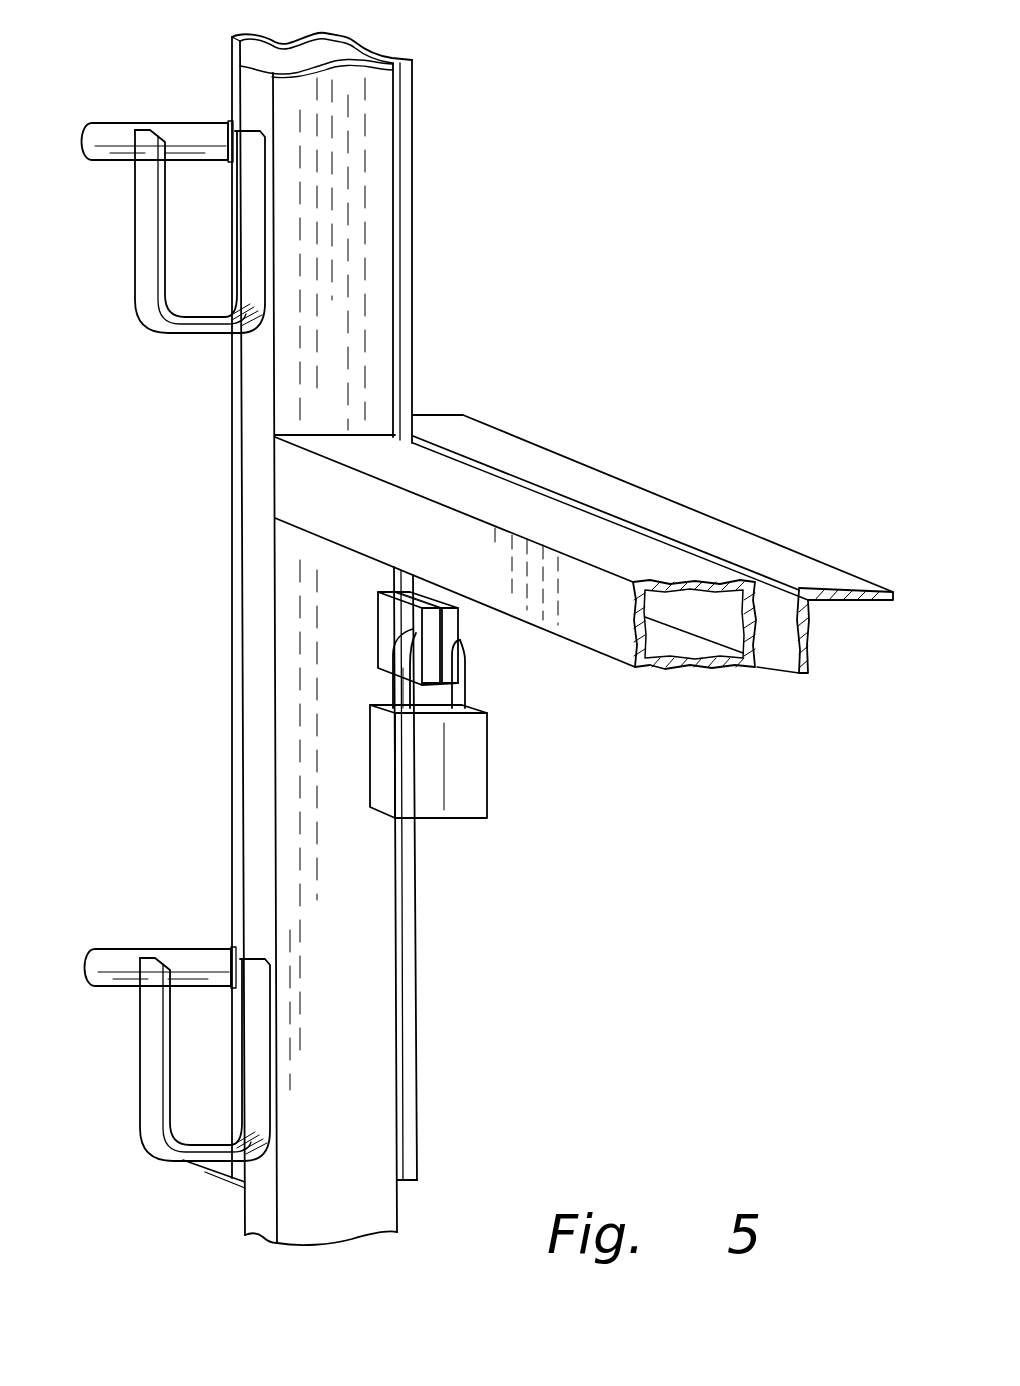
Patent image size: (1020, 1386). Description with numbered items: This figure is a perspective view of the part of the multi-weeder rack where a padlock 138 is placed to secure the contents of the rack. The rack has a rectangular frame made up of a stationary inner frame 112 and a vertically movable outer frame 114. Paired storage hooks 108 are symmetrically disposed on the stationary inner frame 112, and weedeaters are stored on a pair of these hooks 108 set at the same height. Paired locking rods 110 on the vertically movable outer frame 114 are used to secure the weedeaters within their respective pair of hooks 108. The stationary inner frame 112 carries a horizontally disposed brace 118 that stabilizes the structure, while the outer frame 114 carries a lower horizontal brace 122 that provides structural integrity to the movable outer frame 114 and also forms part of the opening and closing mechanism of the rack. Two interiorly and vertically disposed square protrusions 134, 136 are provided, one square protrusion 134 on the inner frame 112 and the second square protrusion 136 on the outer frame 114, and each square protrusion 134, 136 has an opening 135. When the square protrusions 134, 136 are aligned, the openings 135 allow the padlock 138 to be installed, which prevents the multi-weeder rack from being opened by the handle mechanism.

The storage hooks 108 is at (148, 262).
The locking rods 110 is at (177, 125).
The stationary inner frame 112 is at (372, 340).
The vertically movable outer frame 114 is at (402, 147).
The horizontally disposed brace 118 is at (307, 500).
The lower horizontal brace 122 is at (625, 497).
The square protrusion 134 is at (385, 606).
The opening 135 is at (380, 647).
The square protrusion 136 is at (453, 625).
The padlock 138 is at (478, 770).